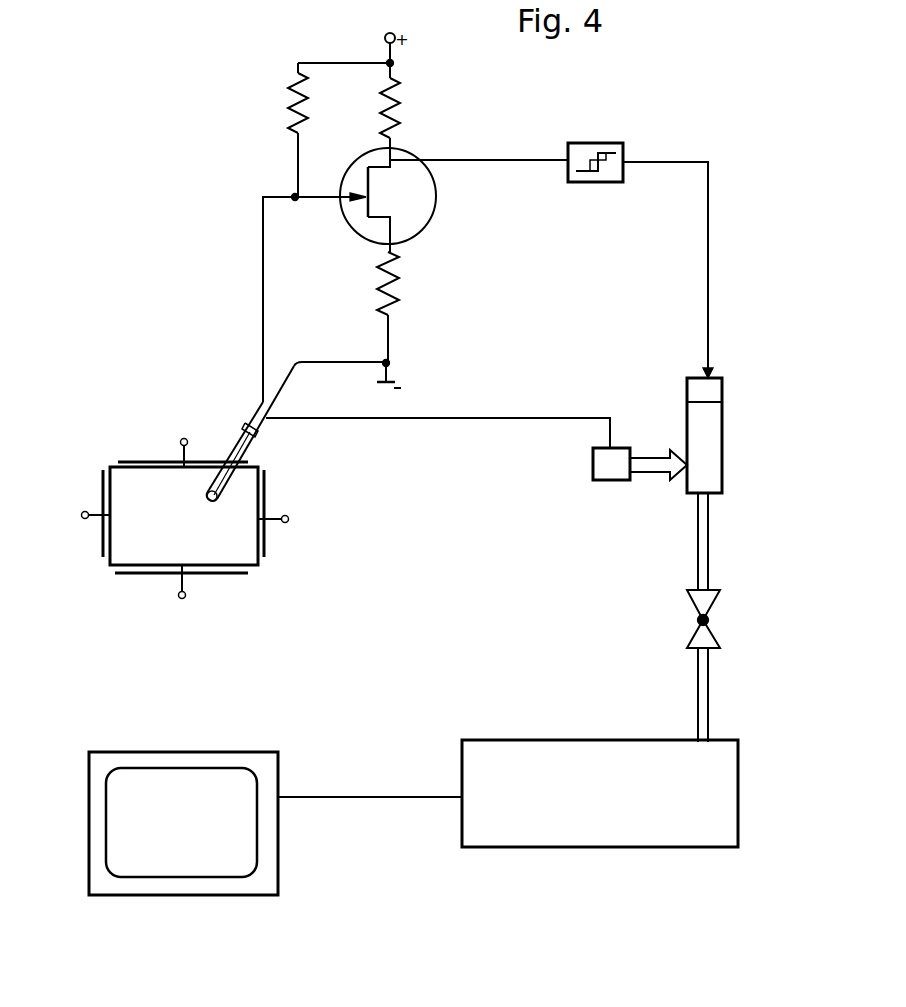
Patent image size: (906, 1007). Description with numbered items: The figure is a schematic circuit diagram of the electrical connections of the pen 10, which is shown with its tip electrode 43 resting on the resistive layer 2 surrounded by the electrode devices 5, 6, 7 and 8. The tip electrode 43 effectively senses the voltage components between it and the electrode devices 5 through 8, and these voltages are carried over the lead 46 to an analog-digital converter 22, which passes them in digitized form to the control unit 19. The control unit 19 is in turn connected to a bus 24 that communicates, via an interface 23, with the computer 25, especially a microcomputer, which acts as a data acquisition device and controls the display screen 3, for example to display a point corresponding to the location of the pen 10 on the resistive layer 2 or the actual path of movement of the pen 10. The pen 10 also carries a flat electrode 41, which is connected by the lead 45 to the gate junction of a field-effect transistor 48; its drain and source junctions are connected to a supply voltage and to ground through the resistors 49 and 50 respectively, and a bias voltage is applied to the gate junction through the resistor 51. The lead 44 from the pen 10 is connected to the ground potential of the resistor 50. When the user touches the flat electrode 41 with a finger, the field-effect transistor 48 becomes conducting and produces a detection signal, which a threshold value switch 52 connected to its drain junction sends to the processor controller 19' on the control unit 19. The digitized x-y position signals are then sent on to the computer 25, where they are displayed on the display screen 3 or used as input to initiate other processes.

The resistive layer 2 is at (227, 553).
The display screen 3 is at (238, 852).
The electrode device 5 is at (289, 521).
The electrode device 6 is at (83, 519).
The electrode device 7 is at (181, 439).
The electrode device 8 is at (186, 597).
The pen 10 is at (235, 453).
The control unit 19 is at (746, 435).
The processor controller 19' is at (743, 392).
The analog-digital converter 22 is at (610, 478).
The interface 23 is at (708, 620).
The bus 24 is at (703, 692).
The computer 25 is at (572, 823).
The flat electrode 41 is at (217, 478).
The tip electrode 43 is at (214, 498).
The lead 44 is at (313, 362).
The lead 45 is at (262, 226).
The lead 46 is at (491, 422).
The field-effect transistor 48 is at (428, 207).
The resistor 49 is at (413, 107).
The resistor 50 is at (408, 293).
The resistor 51 is at (278, 103).
The threshold value switch 52 is at (595, 145).